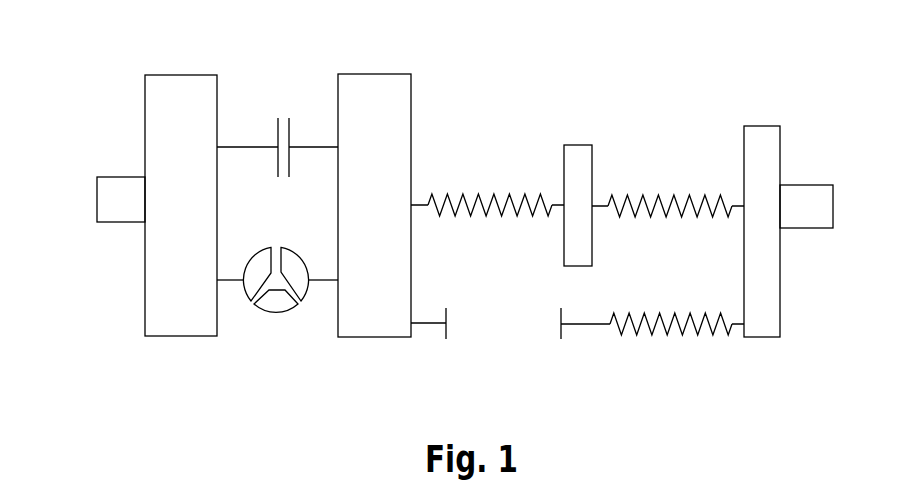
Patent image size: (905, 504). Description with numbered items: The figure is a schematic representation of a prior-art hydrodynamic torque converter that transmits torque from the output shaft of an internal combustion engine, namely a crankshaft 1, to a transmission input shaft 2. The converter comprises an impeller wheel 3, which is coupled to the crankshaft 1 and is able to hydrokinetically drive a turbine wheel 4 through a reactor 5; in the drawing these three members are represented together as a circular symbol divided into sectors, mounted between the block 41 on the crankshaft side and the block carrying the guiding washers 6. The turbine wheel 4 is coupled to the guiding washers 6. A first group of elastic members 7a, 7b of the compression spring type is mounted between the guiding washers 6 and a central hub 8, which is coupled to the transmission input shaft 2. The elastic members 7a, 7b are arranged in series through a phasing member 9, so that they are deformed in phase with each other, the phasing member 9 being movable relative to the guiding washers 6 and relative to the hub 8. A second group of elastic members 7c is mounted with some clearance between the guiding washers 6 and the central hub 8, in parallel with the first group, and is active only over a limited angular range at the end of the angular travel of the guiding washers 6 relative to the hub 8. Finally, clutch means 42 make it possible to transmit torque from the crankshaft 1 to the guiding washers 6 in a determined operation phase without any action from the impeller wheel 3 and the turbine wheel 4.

The crankshaft 1 is at (108, 205).
The transmission input shaft 2 is at (800, 203).
The impeller wheel 3 is at (254, 286).
The turbine wheel 4 is at (303, 287).
The reactor 5 is at (278, 302).
The guiding washers 6 is at (376, 97).
The elastic member of the first group 7a is at (508, 200).
The elastic member of the first group 7b is at (645, 197).
The elastic member of the second group 7c is at (687, 332).
The central hub 8 is at (767, 138).
The phasing member 9 is at (577, 163).
The input mass / flywheel 41 is at (173, 308).
The clutch means 42 is at (289, 116).